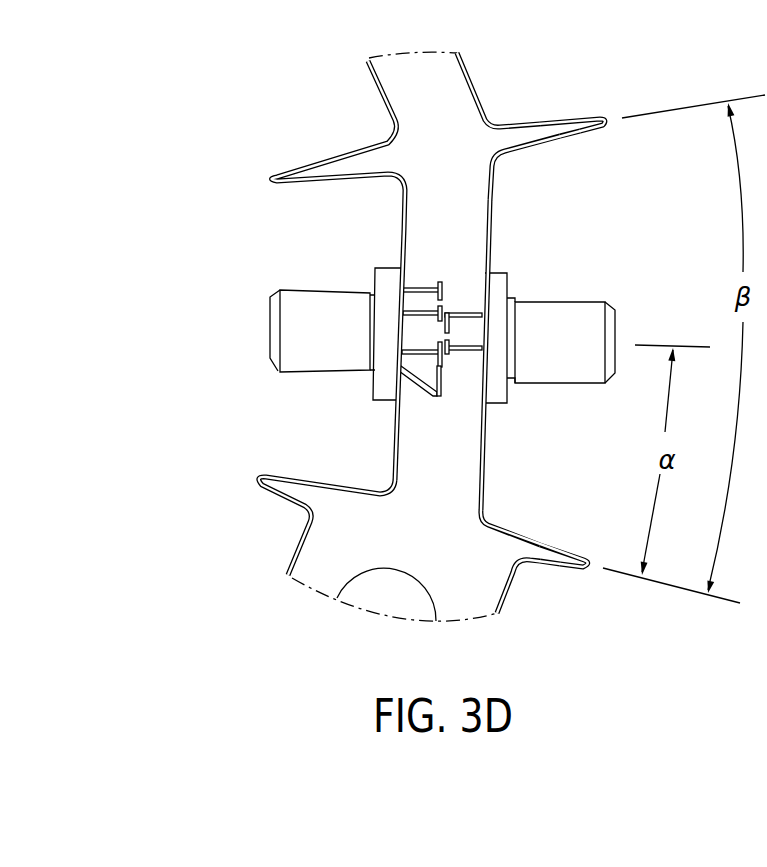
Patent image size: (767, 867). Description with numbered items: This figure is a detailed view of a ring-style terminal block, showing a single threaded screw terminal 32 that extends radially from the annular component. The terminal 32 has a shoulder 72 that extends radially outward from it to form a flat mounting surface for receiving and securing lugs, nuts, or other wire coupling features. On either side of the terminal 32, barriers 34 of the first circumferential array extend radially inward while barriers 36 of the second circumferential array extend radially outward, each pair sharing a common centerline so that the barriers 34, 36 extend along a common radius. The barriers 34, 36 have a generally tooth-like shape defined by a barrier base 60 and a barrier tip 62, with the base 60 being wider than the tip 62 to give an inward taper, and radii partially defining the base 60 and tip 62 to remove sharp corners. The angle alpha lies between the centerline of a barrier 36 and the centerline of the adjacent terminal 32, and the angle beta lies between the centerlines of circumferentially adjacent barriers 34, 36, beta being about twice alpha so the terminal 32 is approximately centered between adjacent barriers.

The terminal 32 is at (271, 350).
The first circumferential array of barriers 34 is at (270, 177).
The second circumferential array of barriers 36 is at (605, 118).
The barrier base 60 is at (499, 127).
The barrier tip 62 is at (607, 126).
The shoulder 72 is at (377, 290).